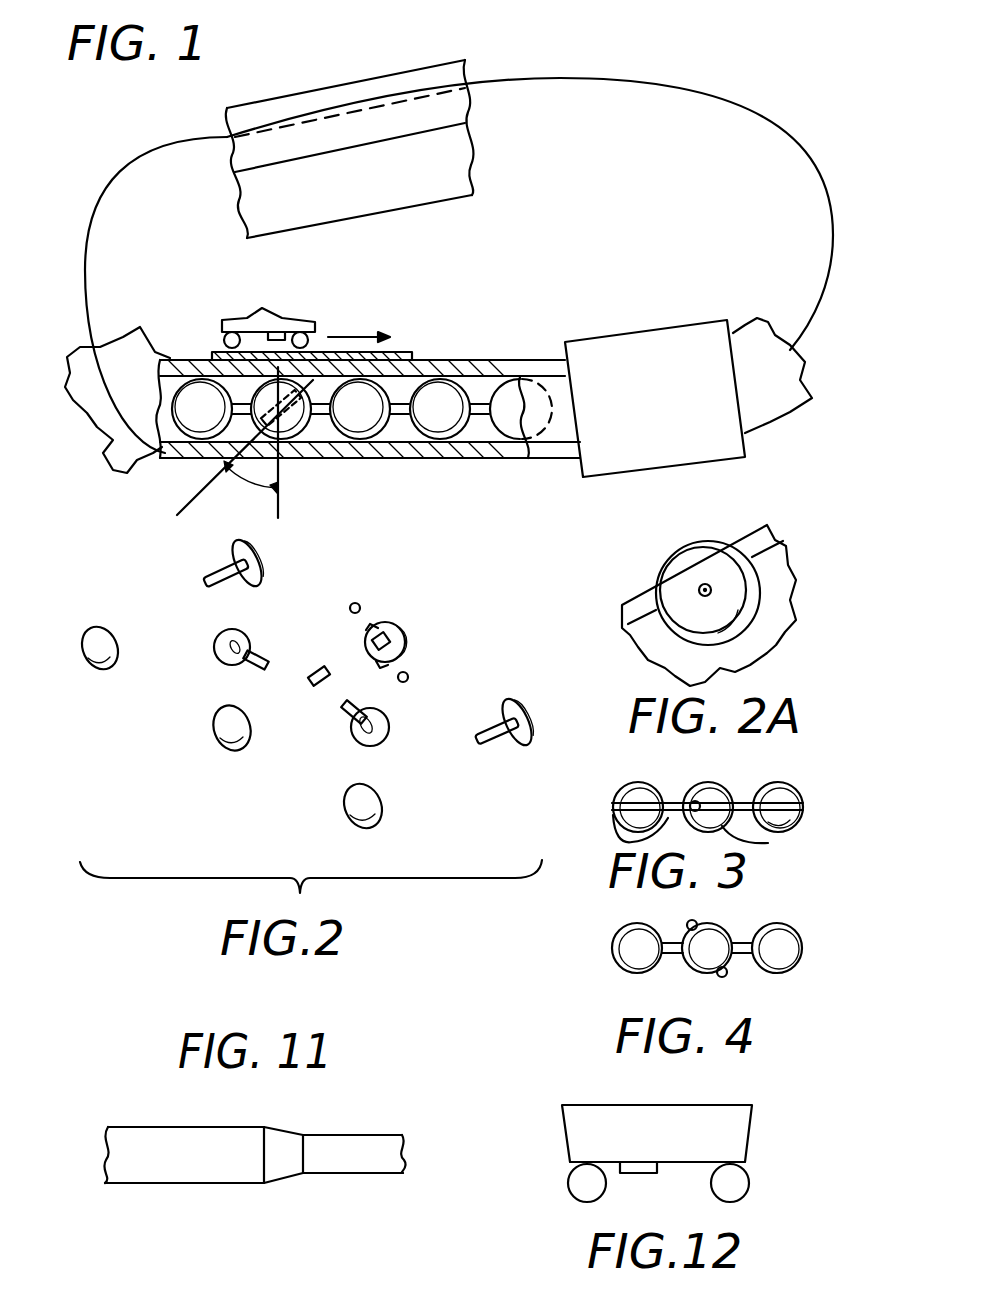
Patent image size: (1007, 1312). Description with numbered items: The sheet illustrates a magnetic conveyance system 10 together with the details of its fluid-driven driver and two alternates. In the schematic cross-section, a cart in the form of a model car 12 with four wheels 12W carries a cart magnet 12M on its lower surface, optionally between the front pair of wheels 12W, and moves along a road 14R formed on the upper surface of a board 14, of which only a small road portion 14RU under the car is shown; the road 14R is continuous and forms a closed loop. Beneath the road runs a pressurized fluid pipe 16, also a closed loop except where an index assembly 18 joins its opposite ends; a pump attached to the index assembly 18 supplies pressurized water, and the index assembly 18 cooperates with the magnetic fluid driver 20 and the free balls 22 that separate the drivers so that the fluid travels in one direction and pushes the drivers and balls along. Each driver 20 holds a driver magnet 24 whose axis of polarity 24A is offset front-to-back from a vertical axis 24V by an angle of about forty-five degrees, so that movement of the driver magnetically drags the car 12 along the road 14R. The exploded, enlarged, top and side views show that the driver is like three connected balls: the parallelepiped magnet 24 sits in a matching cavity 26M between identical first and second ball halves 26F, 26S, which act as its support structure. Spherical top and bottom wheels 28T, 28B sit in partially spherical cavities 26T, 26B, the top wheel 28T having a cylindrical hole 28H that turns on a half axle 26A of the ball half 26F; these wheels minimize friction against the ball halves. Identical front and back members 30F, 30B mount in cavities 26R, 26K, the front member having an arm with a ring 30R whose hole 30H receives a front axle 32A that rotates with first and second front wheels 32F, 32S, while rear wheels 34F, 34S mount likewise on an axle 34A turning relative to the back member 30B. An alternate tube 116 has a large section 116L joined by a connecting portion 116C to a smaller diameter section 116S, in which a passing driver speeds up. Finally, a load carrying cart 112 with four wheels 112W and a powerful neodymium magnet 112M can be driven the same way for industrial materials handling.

In FIG. 1, the magnetic conveyance system 10 is at (577, 513).
In FIG. 1, the model car 12 is at (307, 323).
In FIG. 1, the wheels 12W is at (222, 333).
In FIG. 1, the cart magnet 12M is at (277, 332).
In FIG. 1, the board 14 is at (473, 163).
In FIG. 1, the road 14R is at (442, 72).
In FIG. 1, the road portion 14RU is at (213, 351).
In FIG. 1, the pressurized fluid pipe 16 is at (122, 440).
In FIG. 1, the index assembly 18 is at (671, 448).
In FIG. 1, the magnetic fluid driver 20 is at (372, 425).
In FIG. 2, the magnetic fluid driver 20 is at (135, 750).
In FIG. 1, the free balls 22 is at (467, 433).
In FIG. 1, the driver magnet 24 is at (262, 412).
In FIG. 2, the driver magnet 24 is at (308, 673).
In FIG. 1, the axis of polarity 24A is at (191, 499).
In FIG. 1, the vertical axis 24V is at (280, 507).
In FIG. 2A, the axle 26A is at (705, 590).
In FIG. 2, the bottom partially spherical cavity 26B is at (378, 665).
In FIG. 2, the first ball half 26F is at (387, 623).
In FIG. 2A, the first ball half 26F is at (703, 605).
In FIG. 3, the first ball half 26F is at (695, 790).
In FIG. 2, the cavity 26K is at (365, 643).
In FIG. 2, the cavity 26M is at (397, 633).
In FIG. 2, the cavity 26R is at (410, 640).
In FIG. 2, the second ball half 26S is at (222, 720).
In FIG. 3, the second ball half 26S is at (768, 851).
In FIG. 4, the second ball half 26S is at (695, 968).
In FIG. 2, the top partially spherical cavity 26T is at (363, 630).
In FIG. 2A, the top partially spherical cavity 26T is at (662, 623).
In FIG. 2, the bottom wheel 28B is at (405, 672).
In FIG. 4, the bottom wheel 28B is at (727, 975).
In FIG. 2A, the cylindrical hole 28H is at (705, 590).
In FIG. 2, the top wheel 28T is at (356, 603).
In FIG. 2A, the top wheel 28T is at (705, 545).
In FIG. 3, the top wheel 28T is at (699, 803).
In FIG. 4, the top wheel 28T is at (690, 921).
In FIG. 2, the back member 30B is at (220, 658).
In FIG. 3, the back member 30B is at (628, 842).
In FIG. 4, the back member 30B is at (667, 928).
In FIG. 2, the front member 30F is at (358, 742).
In FIG. 3, the front member 30F is at (803, 807).
In FIG. 4, the front member 30F is at (743, 943).
In FIG. 2, the hole 30H is at (368, 748).
In FIG. 2, the ring 30R is at (342, 720).
In FIG. 2, the front axle 32A is at (508, 723).
In FIG. 2, the first front wheel 32F is at (523, 697).
In FIG. 3, the first front wheel 32F is at (785, 787).
In FIG. 2, the second front wheel 32S is at (377, 807).
In FIG. 3, the second front wheel 32S is at (788, 825).
In FIG. 4, the second front wheel 32S is at (775, 943).
In FIG. 2, the rear axle 34A is at (227, 559).
In FIG. 2, the first rear wheel 34F is at (263, 550).
In FIG. 3, the first rear wheel 34F is at (638, 783).
In FIG. 2, the second rear wheel 34S is at (105, 627).
In FIG. 3, the second rear wheel 34S is at (613, 810).
In FIG. 4, the second rear wheel 34S is at (617, 958).
In FIG. 12, the load carrying cart 112 is at (677, 1105).
In FIG. 12, the neodymium magnet 112M is at (628, 1163).
In FIG. 12, the wheels 112W is at (580, 1203).
In FIG. 11, the alternate tube 116 is at (248, 1153).
In FIG. 11, the large section 116L is at (157, 1127).
In FIG. 11, the connecting portion 116C is at (280, 1183).
In FIG. 11, the smaller diameter section 116S is at (338, 1135).